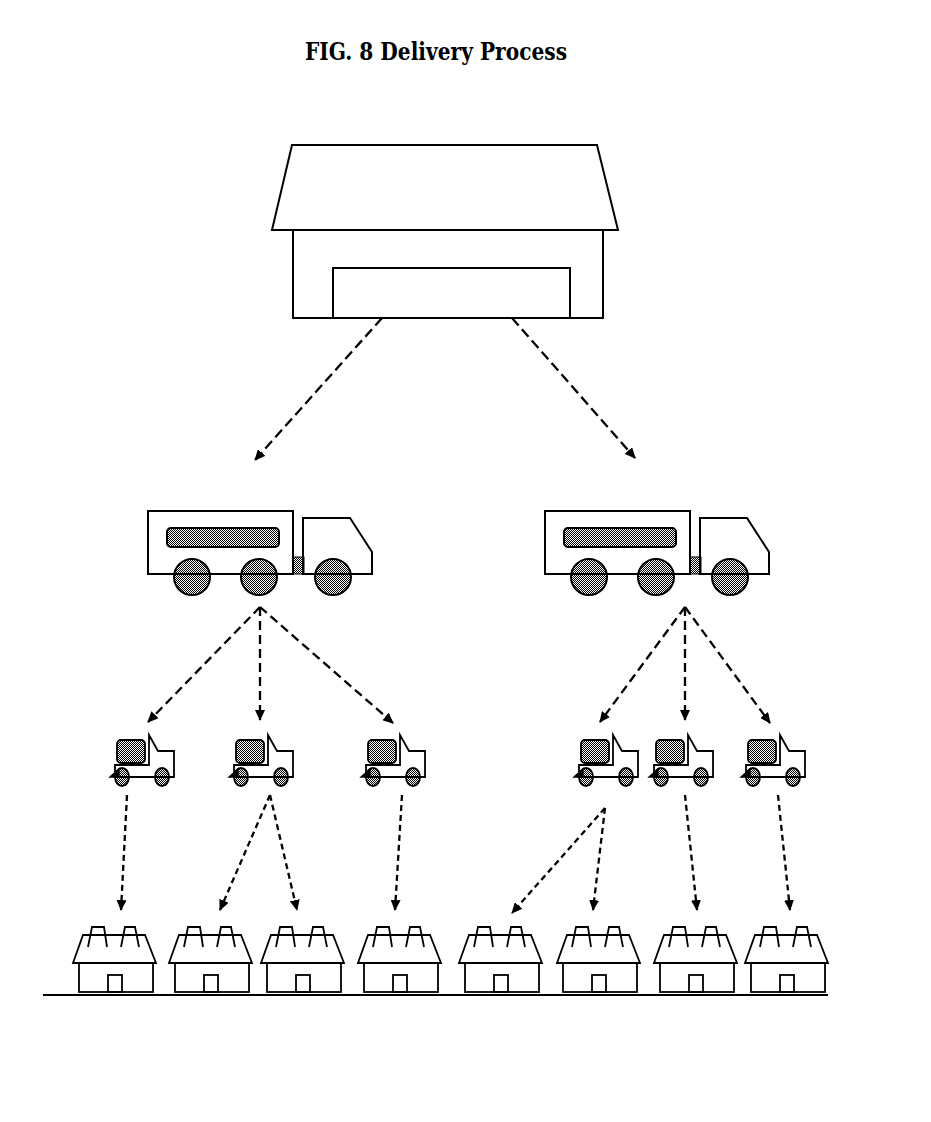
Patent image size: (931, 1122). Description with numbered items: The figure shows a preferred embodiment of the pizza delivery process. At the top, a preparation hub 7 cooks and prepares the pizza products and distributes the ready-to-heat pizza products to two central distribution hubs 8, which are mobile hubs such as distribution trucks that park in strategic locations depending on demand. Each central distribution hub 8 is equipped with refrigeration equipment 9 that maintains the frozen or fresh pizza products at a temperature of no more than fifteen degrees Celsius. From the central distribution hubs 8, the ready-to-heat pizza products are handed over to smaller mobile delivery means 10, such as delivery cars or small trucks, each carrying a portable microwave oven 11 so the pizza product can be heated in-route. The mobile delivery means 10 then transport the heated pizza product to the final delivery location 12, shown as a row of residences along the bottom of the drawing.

The preparation hub 7 is at (292, 283).
The central distribution hub 8 is at (295, 507).
The refrigeration equipment 9 is at (166, 535).
The mobile delivery means 10 is at (424, 788).
The portable microwave oven 11 is at (128, 742).
The final delivery location 12 is at (102, 923).